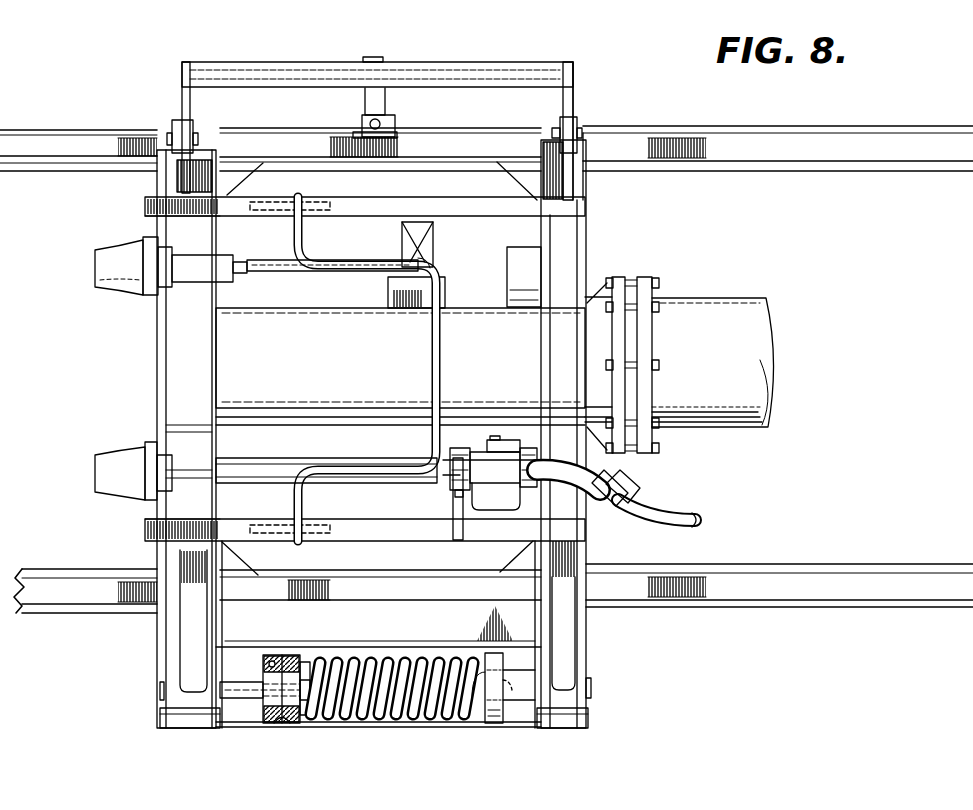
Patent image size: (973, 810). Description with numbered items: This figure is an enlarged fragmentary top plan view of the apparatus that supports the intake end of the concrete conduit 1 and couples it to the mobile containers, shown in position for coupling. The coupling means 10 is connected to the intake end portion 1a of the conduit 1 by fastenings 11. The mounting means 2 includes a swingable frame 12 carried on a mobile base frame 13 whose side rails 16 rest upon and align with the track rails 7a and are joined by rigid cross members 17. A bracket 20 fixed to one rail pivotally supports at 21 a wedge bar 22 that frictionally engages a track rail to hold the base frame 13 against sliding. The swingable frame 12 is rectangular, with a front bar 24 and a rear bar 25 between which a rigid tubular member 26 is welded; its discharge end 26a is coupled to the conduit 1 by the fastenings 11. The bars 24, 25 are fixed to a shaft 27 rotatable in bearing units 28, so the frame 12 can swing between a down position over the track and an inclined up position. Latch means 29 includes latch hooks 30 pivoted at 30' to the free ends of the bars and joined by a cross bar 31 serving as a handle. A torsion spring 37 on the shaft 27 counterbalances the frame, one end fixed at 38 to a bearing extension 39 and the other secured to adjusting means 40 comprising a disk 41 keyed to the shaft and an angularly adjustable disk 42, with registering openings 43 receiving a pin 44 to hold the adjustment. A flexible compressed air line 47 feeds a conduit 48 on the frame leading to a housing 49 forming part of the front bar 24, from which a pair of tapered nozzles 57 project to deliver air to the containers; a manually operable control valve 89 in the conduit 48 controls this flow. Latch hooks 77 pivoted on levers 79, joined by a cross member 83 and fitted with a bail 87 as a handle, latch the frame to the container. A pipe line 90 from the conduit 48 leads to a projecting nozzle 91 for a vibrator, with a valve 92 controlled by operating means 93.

The conduit 1 is at (736, 291).
The intake end portion 1a is at (710, 413).
The mounting means 2 is at (128, 393).
The track rail 7a is at (917, 126).
The coupling means 10 is at (480, 295).
The fastenings 11 is at (650, 299).
The swingable frame 12 is at (205, 21).
The base frame 13 is at (225, 633).
The rails 16 is at (760, 143).
The cross members 17 is at (157, 185).
The bracket 20 is at (392, 127).
The pivot 21 is at (353, 111).
The wedge bar 22 is at (385, 93).
The front bar 24 is at (190, 623).
The rear bar 25 is at (563, 634).
The tubular member 26 is at (400, 366).
The discharge end 26a is at (622, 277).
The shaft 27 is at (248, 692).
The bearing units 28 is at (168, 709).
The latch means 29 is at (582, 104).
The latch hooks 30 is at (367, 118).
The pivot 30' is at (383, 124).
The cross bar 31 is at (506, 66).
The torsion spring 37 is at (400, 721).
The spring end fixing 38 is at (500, 691).
The bearing extension 39 is at (494, 724).
The adjusting means 40 is at (293, 653).
The disk 41 is at (272, 724).
The disk 42 is at (300, 719).
The registering openings 43 is at (271, 655).
The pin 44 is at (305, 665).
The flexible compressed air line 47 is at (667, 501).
The conduit 48 is at (302, 462).
The housing 49 is at (197, 447).
The tapered nozzles 57 is at (95, 273).
The latch hooks 77 is at (240, 217).
The levers 79 is at (430, 204).
The cross member 83 is at (565, 347).
The bail 87 is at (441, 366).
The control valve 89 is at (503, 445).
The pipe line 90 is at (280, 272).
The nozzle 91 is at (200, 292).
The valve 92 is at (432, 276).
The operating means 93 is at (433, 237).